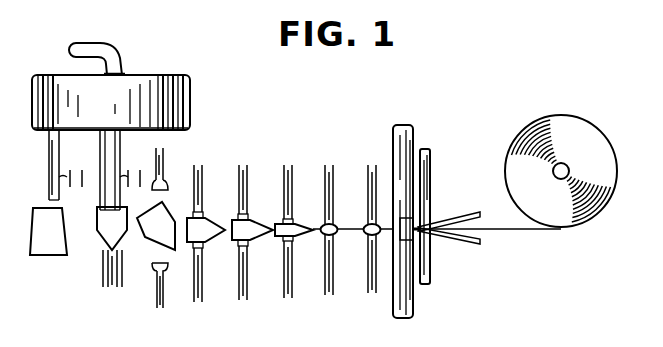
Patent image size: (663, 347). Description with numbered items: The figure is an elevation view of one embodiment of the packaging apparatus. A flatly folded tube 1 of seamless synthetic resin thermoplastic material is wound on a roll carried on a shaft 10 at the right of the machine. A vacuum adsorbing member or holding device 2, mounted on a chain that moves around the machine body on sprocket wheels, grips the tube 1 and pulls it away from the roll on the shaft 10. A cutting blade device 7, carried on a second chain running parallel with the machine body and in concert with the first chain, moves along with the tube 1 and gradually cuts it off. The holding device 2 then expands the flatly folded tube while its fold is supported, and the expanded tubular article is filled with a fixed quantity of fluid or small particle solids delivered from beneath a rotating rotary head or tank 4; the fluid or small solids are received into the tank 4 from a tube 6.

The flatly folded tube 1 is at (508, 161).
The shaft 10 is at (556, 178).
The holding device 2 is at (368, 223).
The tank 4 is at (57, 75).
The tube 6 is at (113, 62).
The cutting blade device 7 is at (461, 244).